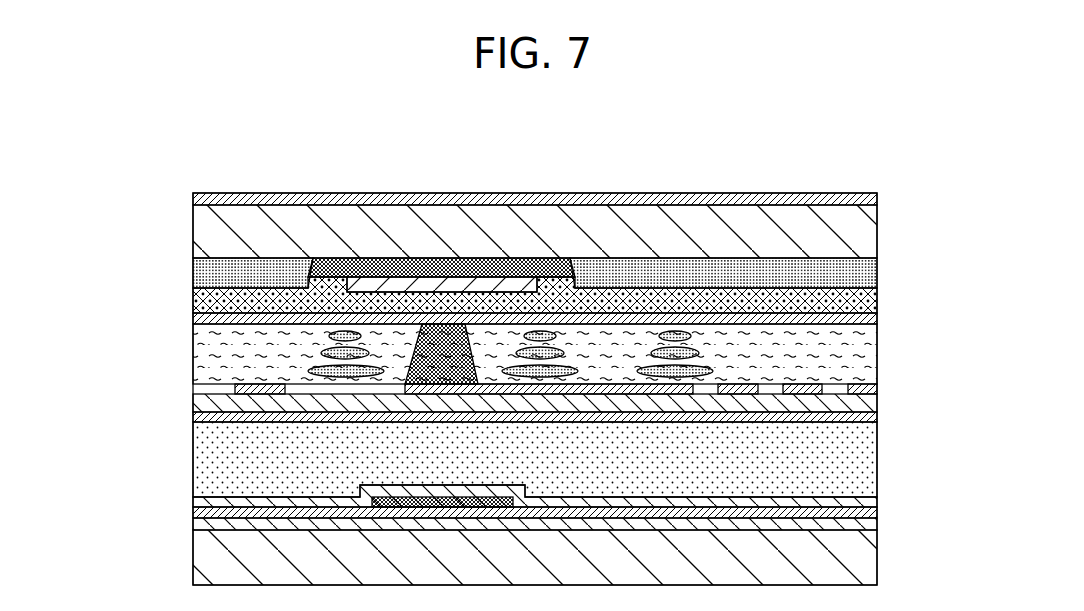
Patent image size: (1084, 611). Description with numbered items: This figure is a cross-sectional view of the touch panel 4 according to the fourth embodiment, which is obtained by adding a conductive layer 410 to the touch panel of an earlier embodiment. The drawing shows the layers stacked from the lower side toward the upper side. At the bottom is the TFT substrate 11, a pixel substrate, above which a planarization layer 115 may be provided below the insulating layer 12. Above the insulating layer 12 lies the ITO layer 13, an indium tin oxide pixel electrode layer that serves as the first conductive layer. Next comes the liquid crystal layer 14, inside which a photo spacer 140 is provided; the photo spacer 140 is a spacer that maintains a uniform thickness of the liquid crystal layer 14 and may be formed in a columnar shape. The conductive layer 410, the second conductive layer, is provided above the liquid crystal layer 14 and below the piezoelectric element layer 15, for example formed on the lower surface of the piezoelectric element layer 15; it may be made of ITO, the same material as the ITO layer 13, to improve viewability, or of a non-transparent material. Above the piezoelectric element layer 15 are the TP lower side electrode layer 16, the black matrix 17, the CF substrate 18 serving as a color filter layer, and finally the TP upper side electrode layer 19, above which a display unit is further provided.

The touch panel 4 is at (805, 129).
The TFT substrate 11 is at (870, 555).
The insulating layer 12 is at (877, 402).
The ITO layer 13 is at (877, 389).
The liquid crystal layer 14 is at (870, 348).
The piezoelectric element layer 15 is at (877, 302).
The TP lower side electrode layer 16 is at (497, 287).
The black matrix 17 is at (547, 272).
The CF substrate 18 is at (870, 231).
The TP upper side electrode layer 19 is at (877, 199).
The planarization layer 115 is at (870, 457).
The photo spacer 140 is at (443, 350).
The conductive layer 410 is at (877, 319).